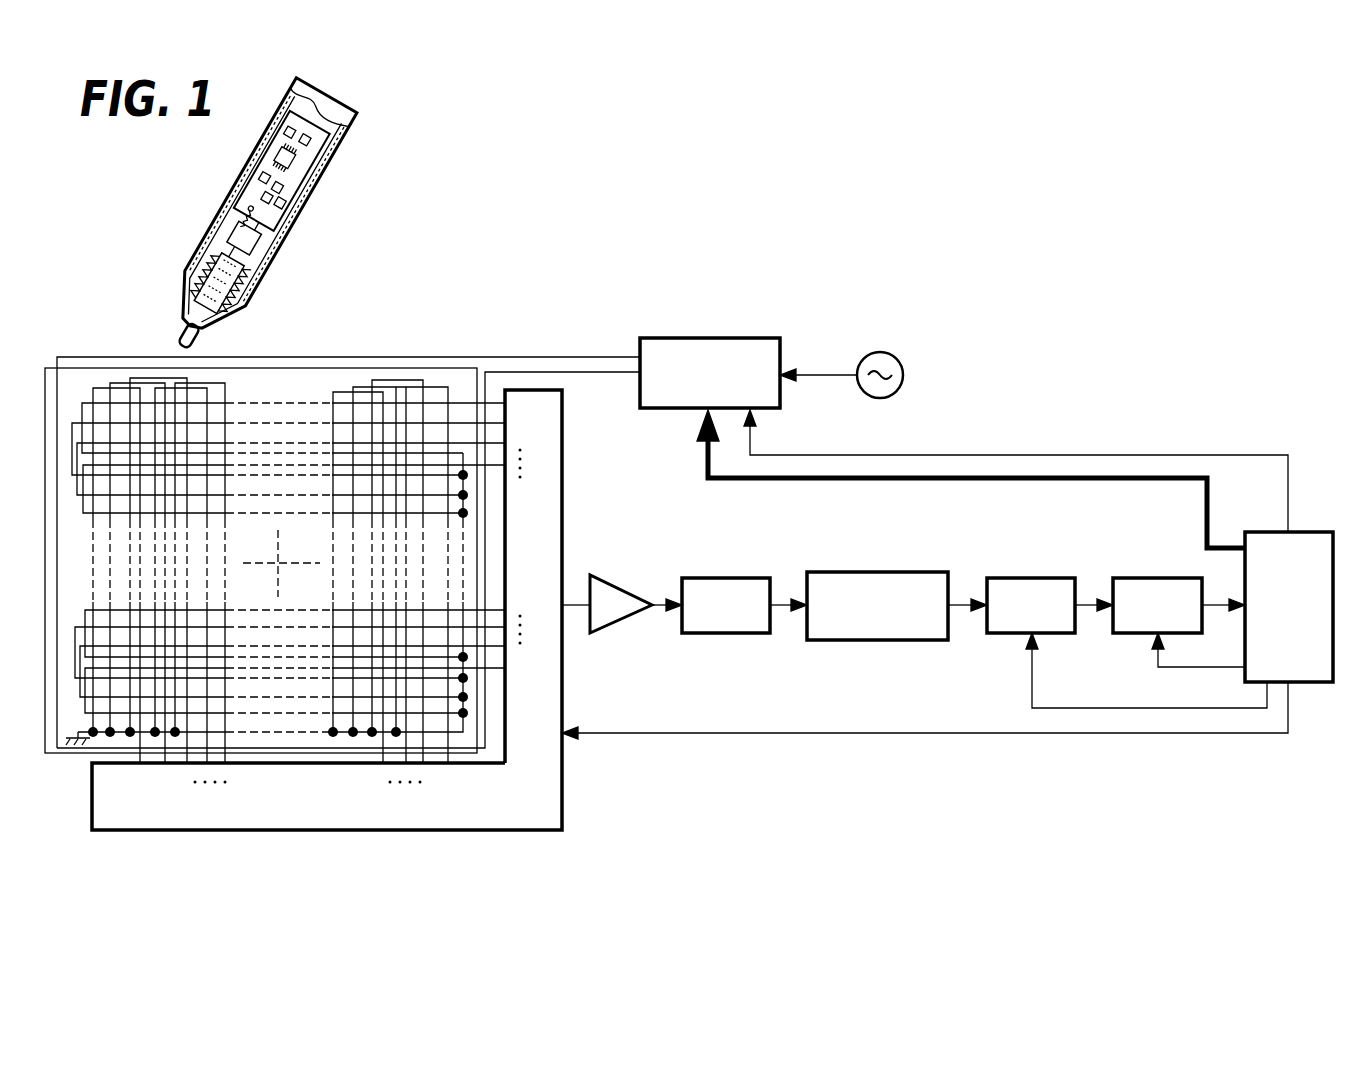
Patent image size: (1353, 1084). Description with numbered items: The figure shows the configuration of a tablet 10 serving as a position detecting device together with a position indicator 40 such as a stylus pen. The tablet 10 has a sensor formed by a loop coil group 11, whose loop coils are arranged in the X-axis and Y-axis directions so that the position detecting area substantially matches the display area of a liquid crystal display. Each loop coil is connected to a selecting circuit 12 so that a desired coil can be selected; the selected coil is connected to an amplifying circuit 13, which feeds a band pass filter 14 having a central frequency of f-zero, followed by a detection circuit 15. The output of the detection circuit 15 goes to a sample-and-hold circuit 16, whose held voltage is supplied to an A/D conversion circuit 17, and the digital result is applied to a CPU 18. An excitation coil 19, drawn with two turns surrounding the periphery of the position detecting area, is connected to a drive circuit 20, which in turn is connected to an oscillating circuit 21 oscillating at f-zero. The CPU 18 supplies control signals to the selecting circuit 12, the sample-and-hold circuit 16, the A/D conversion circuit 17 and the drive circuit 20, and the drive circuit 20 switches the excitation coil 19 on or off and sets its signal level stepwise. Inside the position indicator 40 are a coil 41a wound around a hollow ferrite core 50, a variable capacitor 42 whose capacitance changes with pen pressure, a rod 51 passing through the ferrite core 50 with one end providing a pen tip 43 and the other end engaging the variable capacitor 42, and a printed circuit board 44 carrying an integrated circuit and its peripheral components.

The tablet 10 is at (826, 755).
The loop coil group 11 is at (302, 413).
The selecting circuit 12 is at (470, 832).
The amplifying circuit 13 is at (628, 588).
The band pass filter 14 is at (720, 578).
The detection circuit 15 is at (878, 571).
The sample-and-hold circuit 16 is at (1032, 577).
The A/D conversion circuit 17 is at (1162, 577).
The CPU 18 is at (1302, 530).
The excitation coil 19 is at (520, 356).
The drive circuit 20 is at (728, 337).
The oscillating circuit 21 is at (882, 352).
The position indicator 40 is at (362, 116).
The coil 41a is at (204, 264).
The variable capacitor 42 is at (275, 249).
The pen tip 43 is at (178, 328).
The printed circuit board 44 is at (308, 160).
The ferrite core 50 is at (255, 288).
The rod 51 is at (217, 233).